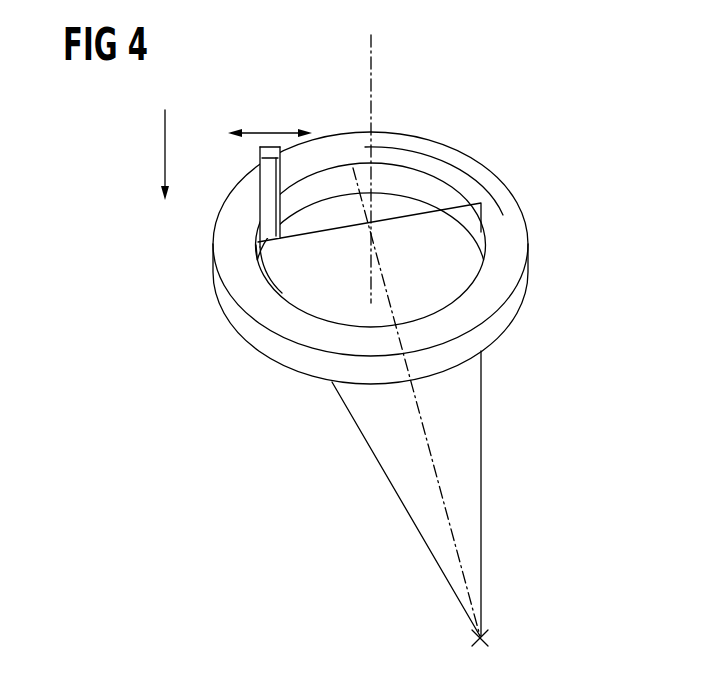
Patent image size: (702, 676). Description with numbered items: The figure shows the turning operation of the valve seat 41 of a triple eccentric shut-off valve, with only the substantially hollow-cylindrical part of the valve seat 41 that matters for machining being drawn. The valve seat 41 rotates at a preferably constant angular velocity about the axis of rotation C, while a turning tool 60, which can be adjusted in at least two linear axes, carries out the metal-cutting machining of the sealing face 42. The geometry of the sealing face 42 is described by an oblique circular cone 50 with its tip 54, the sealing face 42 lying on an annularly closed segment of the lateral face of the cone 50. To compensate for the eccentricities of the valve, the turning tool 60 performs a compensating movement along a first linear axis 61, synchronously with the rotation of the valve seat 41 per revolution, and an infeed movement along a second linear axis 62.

The valve seat 41 is at (512, 240).
The sealing face 42 is at (437, 193).
The oblique circular cone 50 is at (482, 472).
The tip 54 is at (492, 634).
The turning tool 60 is at (266, 182).
The first linear axis 61 is at (268, 131).
The second linear axis 62 is at (164, 152).
The axis of rotation C is at (372, 62).